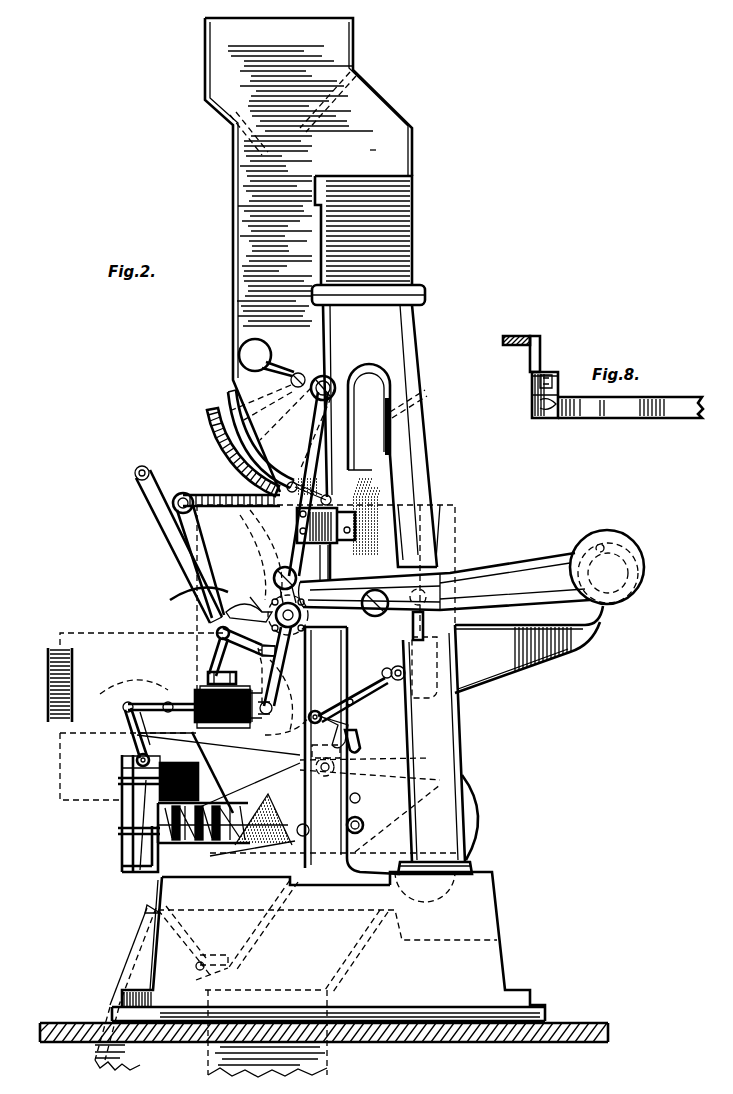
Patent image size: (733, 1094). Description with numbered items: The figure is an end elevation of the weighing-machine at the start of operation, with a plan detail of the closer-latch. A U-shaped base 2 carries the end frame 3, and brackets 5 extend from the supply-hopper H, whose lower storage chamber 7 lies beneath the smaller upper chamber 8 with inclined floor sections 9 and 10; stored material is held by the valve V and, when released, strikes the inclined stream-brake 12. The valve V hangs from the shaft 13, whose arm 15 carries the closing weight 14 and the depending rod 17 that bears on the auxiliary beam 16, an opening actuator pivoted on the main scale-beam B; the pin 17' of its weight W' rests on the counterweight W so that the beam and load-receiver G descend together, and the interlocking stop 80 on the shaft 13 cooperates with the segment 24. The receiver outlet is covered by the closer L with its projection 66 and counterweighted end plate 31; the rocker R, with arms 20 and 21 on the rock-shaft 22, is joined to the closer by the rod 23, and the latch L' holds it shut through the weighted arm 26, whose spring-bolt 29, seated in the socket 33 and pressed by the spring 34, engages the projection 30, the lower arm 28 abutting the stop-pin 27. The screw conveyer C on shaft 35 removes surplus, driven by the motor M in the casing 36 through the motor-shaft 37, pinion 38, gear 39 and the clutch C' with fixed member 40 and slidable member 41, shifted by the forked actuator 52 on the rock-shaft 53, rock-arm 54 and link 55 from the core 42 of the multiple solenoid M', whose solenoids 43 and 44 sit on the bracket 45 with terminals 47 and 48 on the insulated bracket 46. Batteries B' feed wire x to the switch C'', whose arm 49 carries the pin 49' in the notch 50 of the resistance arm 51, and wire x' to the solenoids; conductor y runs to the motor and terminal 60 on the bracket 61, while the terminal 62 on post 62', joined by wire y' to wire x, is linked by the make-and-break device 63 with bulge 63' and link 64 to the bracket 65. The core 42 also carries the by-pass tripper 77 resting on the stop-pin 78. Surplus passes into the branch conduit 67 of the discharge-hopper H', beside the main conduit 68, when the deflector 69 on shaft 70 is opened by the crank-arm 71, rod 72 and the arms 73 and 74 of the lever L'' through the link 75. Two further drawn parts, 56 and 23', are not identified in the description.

In FIG. 2, the supporting base 2 is at (328, 946).
In FIG. 2, the end frame 3 is at (418, 448).
In FIG. 2, the bracket 5 is at (410, 250).
In FIG. 2, the lower chamber 7 is at (232, 295).
In FIG. 2, the upper chamber 8 is at (205, 68).
In FIG. 2, the inclined floor section 9 is at (338, 95).
In FIG. 2, the inclined floor section 10 is at (230, 125).
In FIG. 2, the stream-brake 12 is at (424, 394).
In FIG. 2, the valve-supporting shaft 13 is at (332, 378).
In FIG. 2, the weight 14 is at (239, 358).
In FIG. 2, the valve-closing arm 15 is at (298, 372).
In FIG. 2, the auxiliary scale-beam 16 is at (520, 575).
In FIG. 2, the depending rod 17 is at (315, 484).
In FIG. 2, the laterally-projecting pin 17' is at (612, 526).
In FIG. 2, the rocker arm 20 is at (203, 555).
In FIG. 8, the rocker arm 20 is at (513, 336).
In FIG. 2, the rocker arm 21 is at (150, 476).
In FIG. 2, the rock-shaft 22 is at (185, 496).
In FIG. 2, the intermediate rod 23 is at (174, 546).
In FIG. 2, the pivot 23' is at (317, 824).
In FIG. 2, the skeleton segment 24 is at (216, 500).
In FIG. 2, the latch arm 26 is at (274, 580).
In FIG. 8, the latch arm 26 is at (680, 418).
In FIG. 2, the stop-pin 27 is at (285, 666).
In FIG. 2, the lower latch arm 28 is at (280, 648).
In FIG. 8, the spring-bolt 29 is at (552, 375).
In FIG. 2, the projection 30 is at (250, 560).
In FIG. 8, the projection 30 is at (530, 360).
In FIG. 2, the counterweighted end plate 31 is at (480, 821).
In FIG. 8, the socket 33 is at (532, 403).
In FIG. 8, the protractile spring 34 is at (546, 416).
In FIG. 2, the conveyer shaft 35 is at (143, 868).
In FIG. 2, the casing 36 is at (120, 831).
In FIG. 2, the motor shaft 37 is at (120, 781).
In FIG. 2, the loose pinion 38 is at (122, 806).
In FIG. 2, the gear 39 is at (122, 872).
In FIG. 2, the fixed clutch member 40 is at (122, 762).
In FIG. 2, the slidable clutch member 41 is at (165, 720).
In FIG. 2, the solenoid core 42 is at (170, 702).
In FIG. 2, the solenoid 43 is at (222, 724).
In FIG. 2, the solenoid 44 is at (250, 722).
In FIG. 2, the supporting-bracket 45 is at (197, 690).
In FIG. 2, the insulated bracket 46 is at (205, 686).
In FIG. 2, the terminal point 47 is at (210, 672).
In FIG. 2, the terminal point 48 is at (210, 655).
In FIG. 2, the switch arm 49 is at (247, 629).
In FIG. 2, the projecting pin 49' is at (262, 640).
In FIG. 2, the notch 50 is at (326, 544).
In FIG. 2, the resistance member 51 is at (305, 652).
In FIG. 2, the clutch actuator 52 is at (137, 757).
In FIG. 2, the rock-shaft 53 is at (143, 733).
In FIG. 2, the rock-arm 54 is at (108, 712).
In FIG. 2, the link 55 is at (142, 704).
In FIG. 2, the pivot 56 is at (216, 632).
In FIG. 2, the terminal 60 is at (360, 735).
In FIG. 2, the bracket 61 is at (340, 762).
In FIG. 2, the terminal 62 is at (331, 700).
In FIG. 2, the post 62' is at (338, 728).
In FIG. 2, the make-and-break device 63 is at (353, 699).
In FIG. 2, the bulge 63' is at (372, 710).
In FIG. 2, the link 64 is at (382, 672).
In FIG. 2, the bracket 65 is at (398, 666).
In FIG. 2, the closer projection 66 is at (248, 866).
In FIG. 2, the branch conduit 67 is at (133, 975).
In FIG. 2, the main conduit 68 is at (207, 1058).
In FIG. 2, the deflector 69 is at (185, 948).
In FIG. 2, the supporting-shaft 70 is at (195, 966).
In FIG. 2, the crank-arm 71 is at (214, 962).
In FIG. 2, the link 72 is at (256, 930).
In FIG. 2, the lower lever arm 73 is at (360, 798).
In FIG. 2, the upper lever arm 74 is at (246, 772).
In FIG. 2, the link 75 is at (242, 750).
In FIG. 2, the by-pass tripper 77 is at (278, 677).
In FIG. 2, the stop-pin 78 is at (268, 712).
In FIG. 2, the interlocking stop 80 is at (212, 410).
In FIG. 2, the scale-beam B is at (444, 573).
In FIG. 2, the batteries B' is at (47, 685).
In FIG. 2, the conveyer C is at (226, 835).
In FIG. 2, the clutch C' is at (196, 814).
In FIG. 2, the circuit-controller C'' is at (190, 598).
In FIG. 2, the load-receiver G is at (450, 525).
In FIG. 2, the supply-hopper H is at (381, 147).
In FIG. 2, the duplex hopper H' is at (296, 951).
In FIG. 2, the closer L is at (288, 751).
In FIG. 2, the latch L' is at (247, 597).
In FIG. 8, the latch L' is at (614, 419).
In FIG. 2, the lever L'' is at (335, 823).
In FIG. 2, the electric motor M is at (193, 775).
In FIG. 2, the multiple solenoid M' is at (253, 697).
In FIG. 2, the rocker R is at (326, 602).
In FIG. 2, the valve V is at (240, 433).
In FIG. 2, the counterweight W is at (615, 588).
In FIG. 2, the auxiliary beam weight W' is at (616, 565).
In FIG. 2, the wire x is at (141, 633).
In FIG. 2, the wire x' is at (130, 720).
In FIG. 2, the conductor y is at (77, 766).
In FIG. 2, the wire y' is at (297, 697).